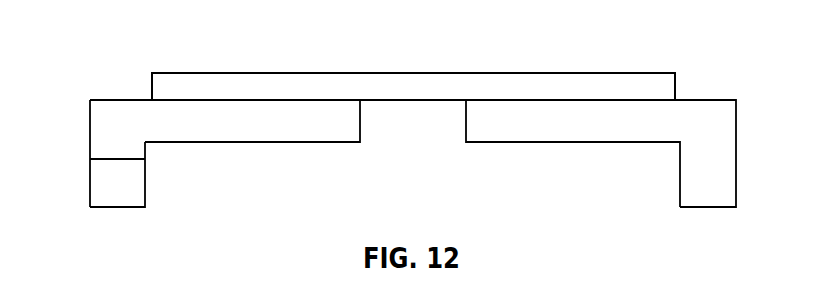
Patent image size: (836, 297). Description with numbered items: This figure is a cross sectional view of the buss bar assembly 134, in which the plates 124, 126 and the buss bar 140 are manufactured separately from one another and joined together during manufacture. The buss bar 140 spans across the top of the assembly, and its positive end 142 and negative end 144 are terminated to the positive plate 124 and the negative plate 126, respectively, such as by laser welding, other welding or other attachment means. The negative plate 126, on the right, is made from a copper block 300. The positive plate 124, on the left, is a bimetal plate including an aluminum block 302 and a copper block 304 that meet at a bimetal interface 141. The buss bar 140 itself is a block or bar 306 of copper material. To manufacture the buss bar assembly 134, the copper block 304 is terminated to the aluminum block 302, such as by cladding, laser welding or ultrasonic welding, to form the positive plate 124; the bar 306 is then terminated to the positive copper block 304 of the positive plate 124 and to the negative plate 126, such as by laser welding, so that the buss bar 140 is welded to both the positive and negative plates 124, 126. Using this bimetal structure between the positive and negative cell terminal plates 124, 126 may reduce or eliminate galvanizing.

The positive plate 124 is at (103, 133).
The negative plate 126 is at (723, 121).
The buss bar assembly 134 is at (646, 56).
The buss bar 140 is at (441, 80).
The bimetal interface 141 is at (110, 166).
The positive end 142 is at (237, 82).
The negative end 144 is at (614, 82).
The copper block 300 is at (603, 132).
The aluminum block 302 is at (133, 188).
The copper block 304 is at (243, 130).
The bar 306 is at (383, 80).